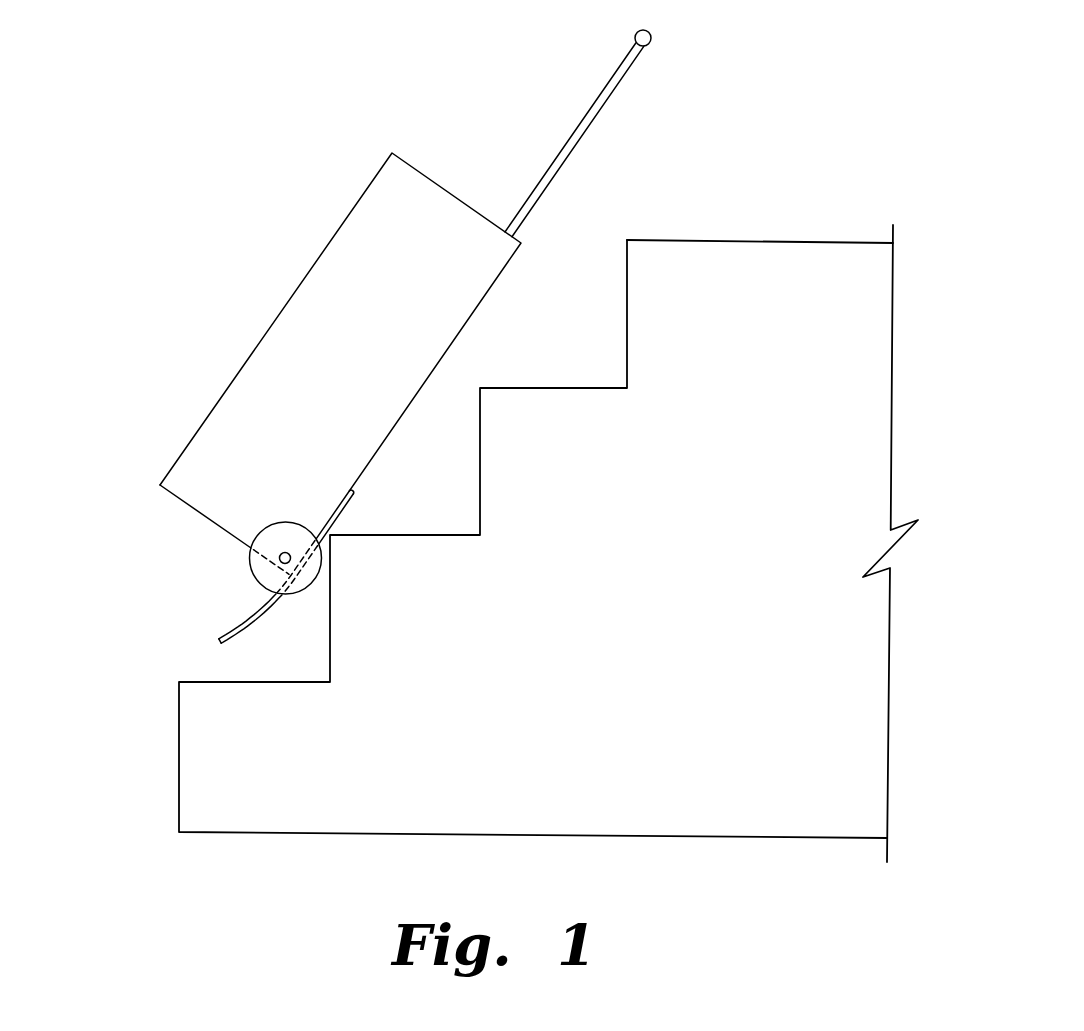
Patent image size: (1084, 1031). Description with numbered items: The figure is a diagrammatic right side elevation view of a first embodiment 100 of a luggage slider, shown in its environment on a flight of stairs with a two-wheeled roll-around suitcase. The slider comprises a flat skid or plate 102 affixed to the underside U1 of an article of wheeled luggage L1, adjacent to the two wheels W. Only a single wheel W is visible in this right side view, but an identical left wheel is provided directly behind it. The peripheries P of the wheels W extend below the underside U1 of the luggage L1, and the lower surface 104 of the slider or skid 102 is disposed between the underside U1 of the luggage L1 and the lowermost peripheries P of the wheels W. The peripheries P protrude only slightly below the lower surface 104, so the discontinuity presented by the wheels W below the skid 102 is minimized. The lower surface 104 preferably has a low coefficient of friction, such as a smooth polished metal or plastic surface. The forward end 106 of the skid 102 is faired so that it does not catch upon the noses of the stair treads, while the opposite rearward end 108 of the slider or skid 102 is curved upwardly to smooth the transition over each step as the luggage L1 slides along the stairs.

The first embodiment of the luggage slider 100 is at (153, 634).
The slider or skid 102 is at (253, 617).
The lower surface 104 is at (343, 521).
The forward end 106 is at (353, 494).
The rearward end 108 is at (223, 647).
The wheel W is at (279, 522).
The periphery P is at (318, 592).
The underside U1 is at (430, 380).
The luggage L1 is at (377, 318).